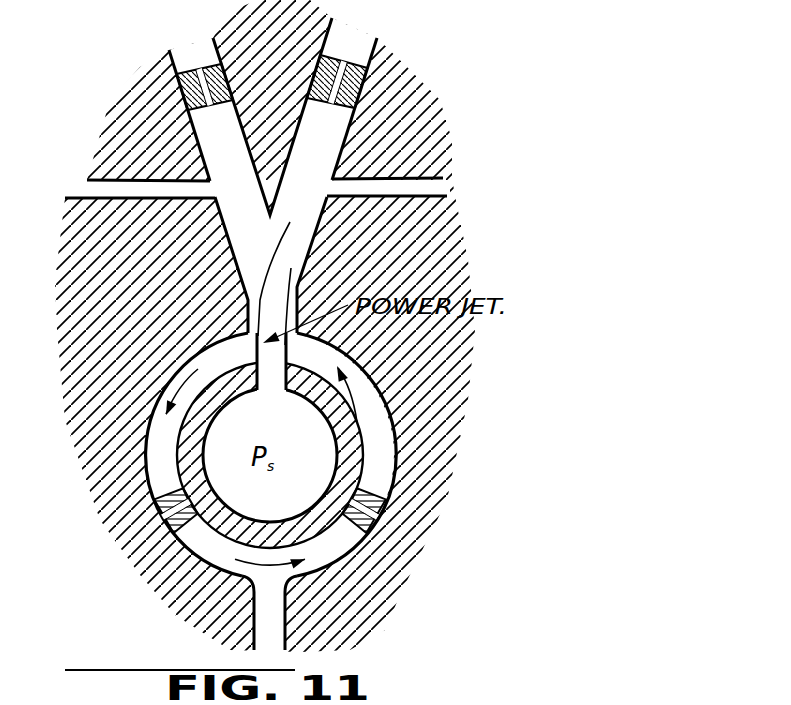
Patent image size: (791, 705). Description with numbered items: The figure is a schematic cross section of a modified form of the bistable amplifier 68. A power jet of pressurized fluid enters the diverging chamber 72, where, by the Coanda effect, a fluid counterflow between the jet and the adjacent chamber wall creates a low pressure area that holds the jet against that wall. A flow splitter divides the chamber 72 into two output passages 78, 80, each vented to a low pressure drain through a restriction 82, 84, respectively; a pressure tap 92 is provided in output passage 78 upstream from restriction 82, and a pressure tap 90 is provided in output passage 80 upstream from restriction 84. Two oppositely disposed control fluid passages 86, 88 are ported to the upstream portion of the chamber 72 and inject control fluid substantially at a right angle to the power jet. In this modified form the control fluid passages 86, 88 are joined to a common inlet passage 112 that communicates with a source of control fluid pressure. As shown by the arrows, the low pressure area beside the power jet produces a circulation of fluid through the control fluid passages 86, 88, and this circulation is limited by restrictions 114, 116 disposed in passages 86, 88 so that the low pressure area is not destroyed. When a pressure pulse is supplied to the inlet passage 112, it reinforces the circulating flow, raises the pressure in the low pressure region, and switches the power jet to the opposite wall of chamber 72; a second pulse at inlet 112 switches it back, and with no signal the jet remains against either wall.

The bistable amplifier 68 is at (280, 77).
The diverging chamber 72 is at (263, 262).
The output passage 78 is at (205, 138).
The output passage 80 is at (338, 138).
The restriction 82 is at (182, 96).
The restriction 84 is at (352, 94).
The control fluid passage 86 is at (145, 437).
The control fluid passage 88 is at (395, 428).
The pressure tap 90 is at (418, 190).
The pressure tap 92 is at (95, 190).
The common inlet passage 112 is at (280, 612).
The restriction 114 is at (158, 517).
The restriction 116 is at (380, 518).